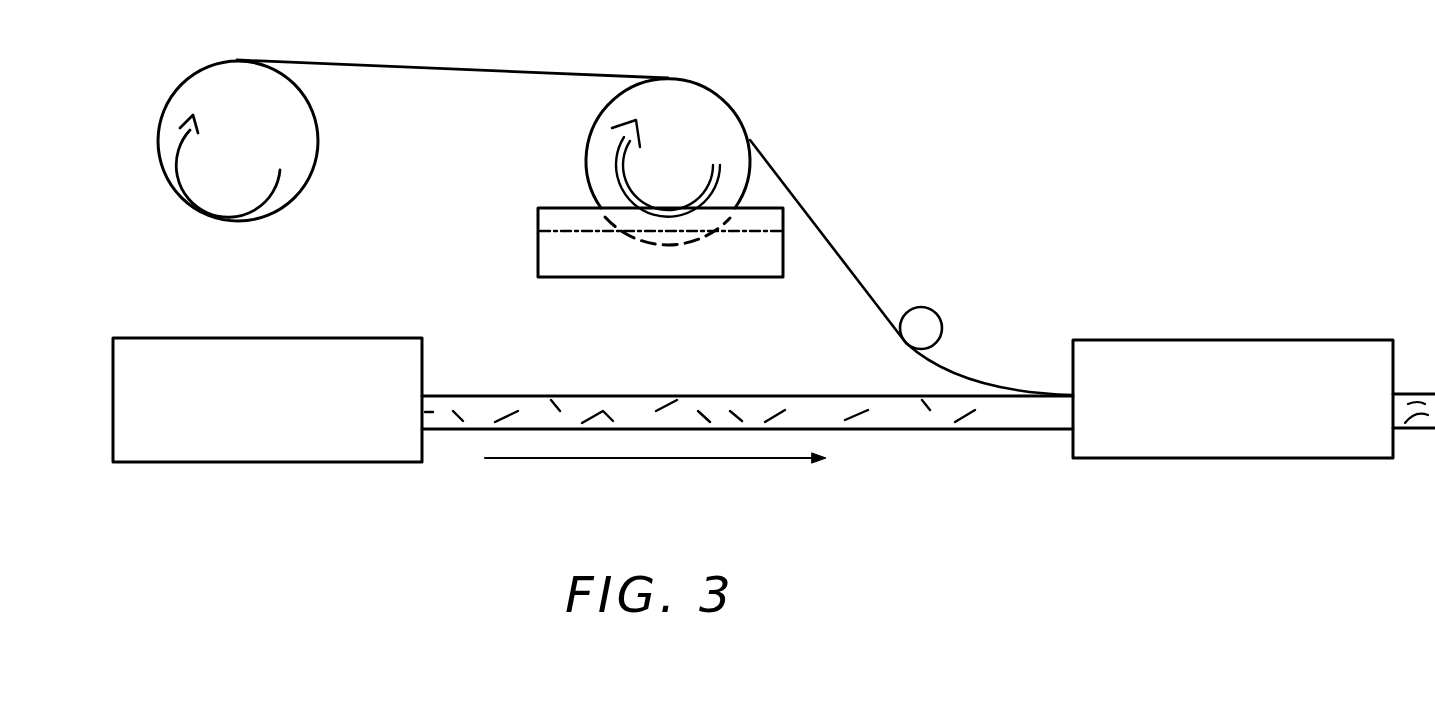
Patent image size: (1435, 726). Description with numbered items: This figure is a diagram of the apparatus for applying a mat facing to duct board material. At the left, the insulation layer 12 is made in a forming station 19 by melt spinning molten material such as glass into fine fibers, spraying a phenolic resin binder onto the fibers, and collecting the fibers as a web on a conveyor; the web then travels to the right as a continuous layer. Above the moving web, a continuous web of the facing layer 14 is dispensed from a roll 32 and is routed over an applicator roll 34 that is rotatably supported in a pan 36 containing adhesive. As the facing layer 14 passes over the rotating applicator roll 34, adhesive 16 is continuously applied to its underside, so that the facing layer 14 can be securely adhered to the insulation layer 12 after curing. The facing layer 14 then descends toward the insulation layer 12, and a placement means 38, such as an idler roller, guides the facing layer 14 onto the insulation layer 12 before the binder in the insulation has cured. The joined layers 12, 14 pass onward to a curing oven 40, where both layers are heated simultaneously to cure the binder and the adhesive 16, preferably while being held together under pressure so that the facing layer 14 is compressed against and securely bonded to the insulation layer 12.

The insulation layer 12 is at (553, 397).
The facing layer 14 is at (427, 67).
The adhesive 16 is at (572, 232).
The forming station 19 is at (290, 424).
The roll 32 is at (318, 127).
The applicator roll 34 is at (605, 105).
The pan 36 is at (538, 250).
The placement means 38 is at (932, 307).
The curing oven 40 is at (1257, 417).